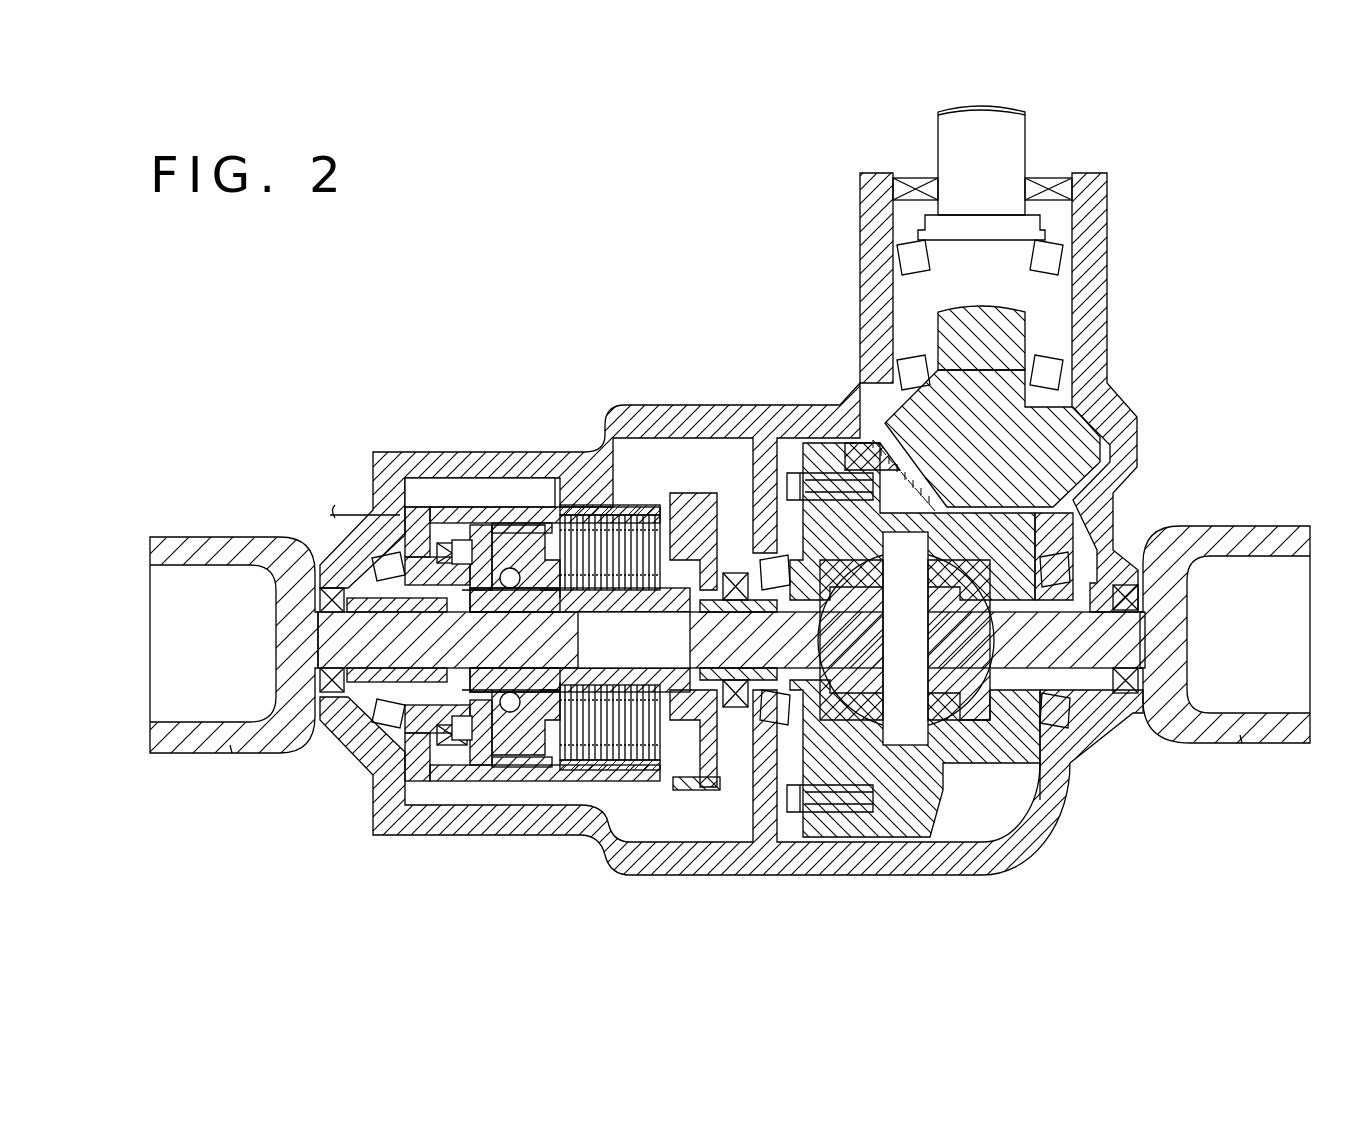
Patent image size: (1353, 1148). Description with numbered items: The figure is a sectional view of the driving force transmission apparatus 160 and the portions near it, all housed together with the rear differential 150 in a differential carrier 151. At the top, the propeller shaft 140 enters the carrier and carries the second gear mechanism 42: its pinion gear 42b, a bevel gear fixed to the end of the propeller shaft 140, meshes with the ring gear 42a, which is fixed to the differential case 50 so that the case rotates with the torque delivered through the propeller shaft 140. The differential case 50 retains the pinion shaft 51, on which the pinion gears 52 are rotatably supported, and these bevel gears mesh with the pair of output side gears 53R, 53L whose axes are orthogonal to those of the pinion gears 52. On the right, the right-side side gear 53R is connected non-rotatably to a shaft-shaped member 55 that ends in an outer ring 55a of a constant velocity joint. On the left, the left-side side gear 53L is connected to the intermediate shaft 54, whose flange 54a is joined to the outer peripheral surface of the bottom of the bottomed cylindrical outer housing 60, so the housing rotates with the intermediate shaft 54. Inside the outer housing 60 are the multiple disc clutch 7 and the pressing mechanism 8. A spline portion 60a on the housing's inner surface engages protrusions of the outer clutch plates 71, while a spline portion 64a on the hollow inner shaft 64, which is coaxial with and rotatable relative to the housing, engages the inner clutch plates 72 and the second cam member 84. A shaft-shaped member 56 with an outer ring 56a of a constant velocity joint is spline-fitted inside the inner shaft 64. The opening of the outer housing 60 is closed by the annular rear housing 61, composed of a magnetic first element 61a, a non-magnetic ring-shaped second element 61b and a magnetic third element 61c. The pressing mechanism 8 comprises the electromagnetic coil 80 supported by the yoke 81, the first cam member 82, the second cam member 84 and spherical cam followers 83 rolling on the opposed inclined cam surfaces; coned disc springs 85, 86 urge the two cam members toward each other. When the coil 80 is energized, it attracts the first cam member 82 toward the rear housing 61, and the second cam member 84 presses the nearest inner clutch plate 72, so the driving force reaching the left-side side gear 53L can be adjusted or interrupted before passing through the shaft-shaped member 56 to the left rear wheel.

The multiple disc clutch 7 is at (652, 342).
The pressing mechanism 8 is at (615, 850).
The second gear mechanism 42 is at (837, 330).
The ring gear 42a is at (850, 462).
The pinion gear 42b is at (890, 415).
The differential case 50 is at (1013, 740).
The pinion shaft 51 is at (905, 747).
The pinion gear 52 is at (1037, 463).
The left-side side gear 53L is at (843, 700).
The right-side side gear 53R is at (1050, 552).
The intermediate shaft 54 is at (746, 740).
The flange 54a is at (690, 790).
The shaft-shaped member 55 is at (1085, 705).
The outer ring 55a is at (1242, 743).
The shaft-shaped member 56 is at (325, 732).
The outer ring 56a is at (230, 748).
The outer housing 60 is at (660, 452).
The spline portion 60a is at (672, 500).
The rear housing 61 is at (570, 398).
The first element 61a is at (480, 530).
The second element 61b is at (518, 525).
The third element 61c is at (420, 530).
The inner shaft 64 is at (645, 672).
The spline portion 64a is at (595, 672).
The outer clutch plate 71 is at (590, 505).
The inner clutch plate 72 is at (600, 510).
The electromagnetic coil 80 is at (455, 737).
The yoke 81 is at (378, 822).
The first cam member 82 is at (482, 728).
The cam follower 83 is at (515, 712).
The second cam member 84 is at (545, 747).
The coned disc spring 85 is at (482, 780).
The coned disc spring 86 is at (520, 760).
The propeller shaft 140 is at (1015, 160).
The rear differential 150 is at (985, 785).
The differential carrier 151 is at (1085, 265).
The driving force transmission apparatus 160 is at (425, 495).